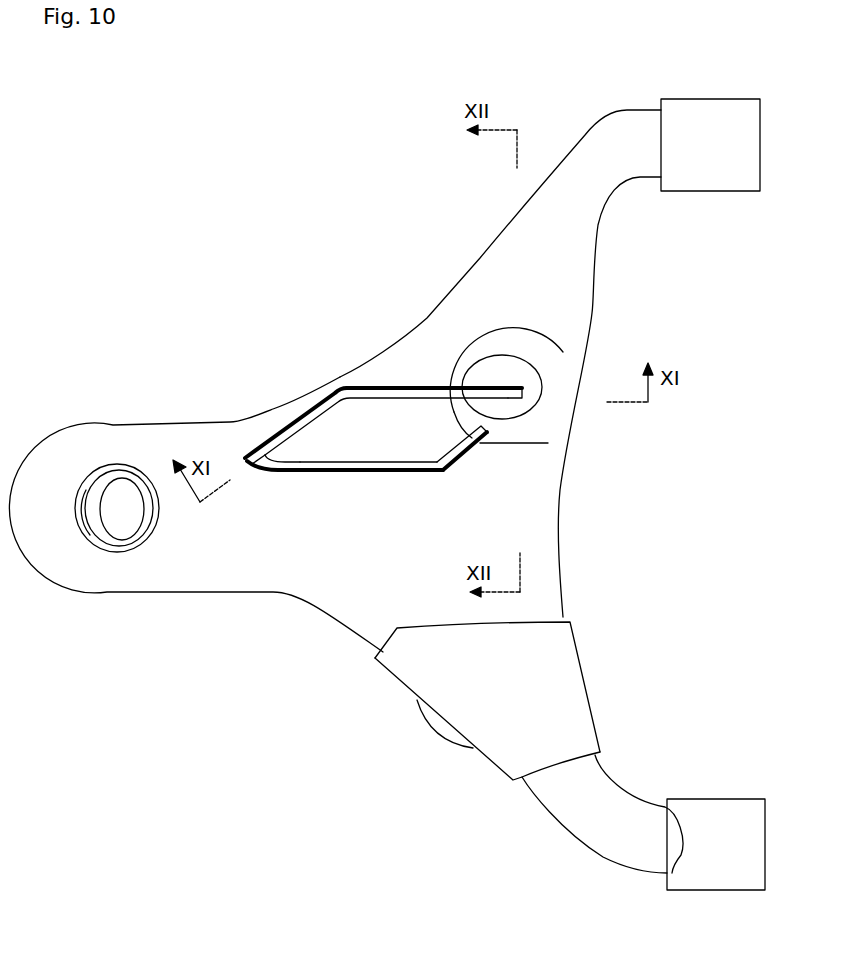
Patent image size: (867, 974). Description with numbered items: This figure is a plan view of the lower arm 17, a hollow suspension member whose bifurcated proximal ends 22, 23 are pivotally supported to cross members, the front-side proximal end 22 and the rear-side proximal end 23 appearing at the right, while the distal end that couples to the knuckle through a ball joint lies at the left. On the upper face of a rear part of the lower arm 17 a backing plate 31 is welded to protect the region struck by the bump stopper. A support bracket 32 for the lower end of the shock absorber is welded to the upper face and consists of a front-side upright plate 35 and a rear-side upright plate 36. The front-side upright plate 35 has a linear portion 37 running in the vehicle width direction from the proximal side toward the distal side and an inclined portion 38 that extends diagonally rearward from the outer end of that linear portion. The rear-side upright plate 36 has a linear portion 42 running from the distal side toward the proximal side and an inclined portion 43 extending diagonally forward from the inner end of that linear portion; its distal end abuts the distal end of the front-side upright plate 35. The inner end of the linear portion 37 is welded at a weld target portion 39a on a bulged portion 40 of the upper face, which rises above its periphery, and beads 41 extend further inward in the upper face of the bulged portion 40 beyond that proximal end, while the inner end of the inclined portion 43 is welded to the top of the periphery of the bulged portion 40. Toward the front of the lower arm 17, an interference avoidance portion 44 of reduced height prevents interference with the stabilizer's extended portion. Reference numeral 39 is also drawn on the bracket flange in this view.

The lower arm 17 is at (182, 402).
The front-side proximal end 22 is at (700, 107).
The rear-side proximal end 23 is at (722, 882).
The backing plate 31 is at (458, 715).
The support bracket 32 is at (392, 372).
The front-side upright plate 35 is at (302, 404).
The rear-side upright plate 36 is at (393, 470).
The linear portion 37 is at (373, 402).
The inclined portion 38 is at (290, 442).
The upper flange of bead 39 is at (415, 385).
The weld target portion 39a is at (488, 386).
The bulged portion 40 is at (513, 360).
The beads 41 is at (513, 387).
The linear portion 42 is at (332, 472).
The inclined portion 43 is at (468, 447).
The interference avoidance portion 44 is at (455, 308).